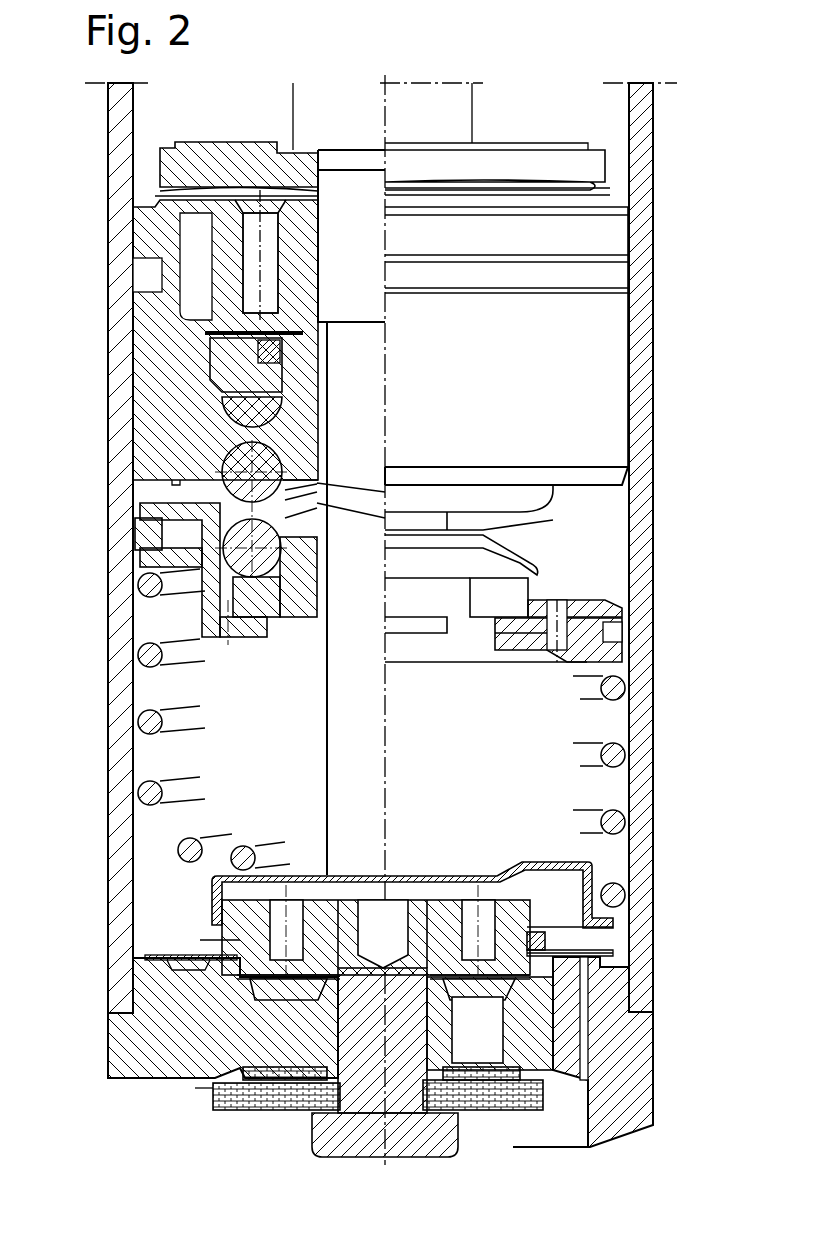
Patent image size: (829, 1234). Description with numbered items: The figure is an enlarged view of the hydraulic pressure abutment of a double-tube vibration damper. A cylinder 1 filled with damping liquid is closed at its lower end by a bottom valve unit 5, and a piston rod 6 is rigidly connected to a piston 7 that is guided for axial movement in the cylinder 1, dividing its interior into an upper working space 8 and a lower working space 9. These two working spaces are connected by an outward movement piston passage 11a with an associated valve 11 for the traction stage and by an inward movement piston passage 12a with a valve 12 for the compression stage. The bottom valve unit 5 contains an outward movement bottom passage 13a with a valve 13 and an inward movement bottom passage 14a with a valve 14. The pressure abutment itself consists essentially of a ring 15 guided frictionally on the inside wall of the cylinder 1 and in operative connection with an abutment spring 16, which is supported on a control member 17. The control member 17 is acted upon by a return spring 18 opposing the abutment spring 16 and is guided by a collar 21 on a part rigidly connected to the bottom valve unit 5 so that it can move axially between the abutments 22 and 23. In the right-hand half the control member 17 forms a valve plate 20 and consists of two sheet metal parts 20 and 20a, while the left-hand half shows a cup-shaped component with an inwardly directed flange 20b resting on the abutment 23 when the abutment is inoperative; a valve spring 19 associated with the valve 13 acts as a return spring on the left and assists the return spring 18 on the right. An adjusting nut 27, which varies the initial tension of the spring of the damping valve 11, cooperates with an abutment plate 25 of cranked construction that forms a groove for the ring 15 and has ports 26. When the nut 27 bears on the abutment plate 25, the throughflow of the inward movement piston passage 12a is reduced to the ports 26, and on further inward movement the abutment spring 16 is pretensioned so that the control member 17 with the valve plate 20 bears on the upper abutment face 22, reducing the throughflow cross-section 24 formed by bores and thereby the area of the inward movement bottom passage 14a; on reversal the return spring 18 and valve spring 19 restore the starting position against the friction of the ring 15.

The cylinder 1 is at (642, 370).
The bottom valve unit 5 is at (640, 1090).
The piston rod 6 is at (463, 124).
The piston 7 is at (618, 298).
The upper working space 8 is at (236, 108).
The lower working space 9 is at (326, 776).
The valve 11 is at (207, 397).
The outward movement piston passage 11a is at (275, 265).
The valve 12 is at (150, 185).
The inward movement piston passage 12a is at (190, 283).
The valve 13 is at (160, 947).
The outward movement bottom passage 13a is at (582, 1045).
The valve 14 is at (200, 1110).
The inward movement bottom passage 14a is at (478, 1062).
The ring 15 is at (625, 632).
The abutment spring 16 is at (616, 692).
The control member 17 is at (605, 872).
The return spring 18 is at (550, 887).
The valve spring 19 is at (200, 940).
The valve plate 20 is at (505, 893).
The sheet metal part 20a is at (570, 946).
The inwardly directed flange 20b is at (205, 878).
The collar 21 is at (537, 933).
The upper abutment face 22 is at (577, 873).
The abutment 23 is at (595, 948).
The throughflow cross-section 24 is at (532, 915).
The abutment plate 25 is at (608, 607).
The ports 26 is at (565, 622).
The adjusting nut 27 is at (202, 605).